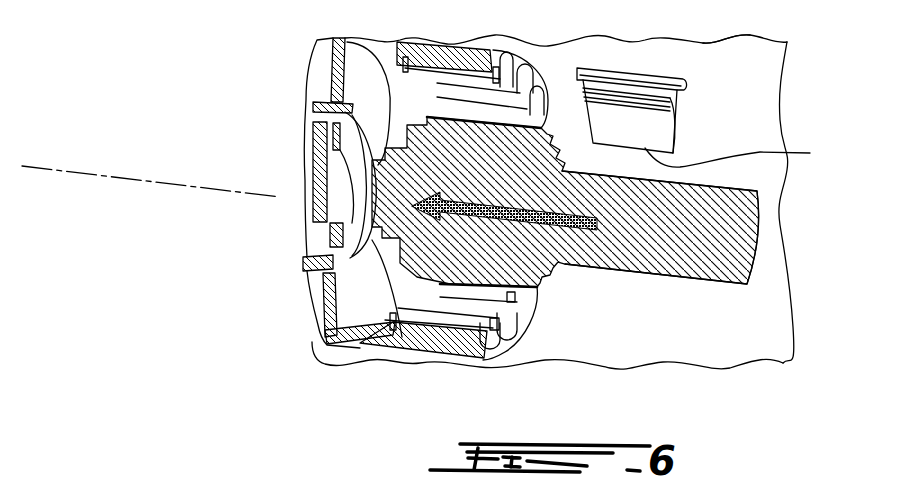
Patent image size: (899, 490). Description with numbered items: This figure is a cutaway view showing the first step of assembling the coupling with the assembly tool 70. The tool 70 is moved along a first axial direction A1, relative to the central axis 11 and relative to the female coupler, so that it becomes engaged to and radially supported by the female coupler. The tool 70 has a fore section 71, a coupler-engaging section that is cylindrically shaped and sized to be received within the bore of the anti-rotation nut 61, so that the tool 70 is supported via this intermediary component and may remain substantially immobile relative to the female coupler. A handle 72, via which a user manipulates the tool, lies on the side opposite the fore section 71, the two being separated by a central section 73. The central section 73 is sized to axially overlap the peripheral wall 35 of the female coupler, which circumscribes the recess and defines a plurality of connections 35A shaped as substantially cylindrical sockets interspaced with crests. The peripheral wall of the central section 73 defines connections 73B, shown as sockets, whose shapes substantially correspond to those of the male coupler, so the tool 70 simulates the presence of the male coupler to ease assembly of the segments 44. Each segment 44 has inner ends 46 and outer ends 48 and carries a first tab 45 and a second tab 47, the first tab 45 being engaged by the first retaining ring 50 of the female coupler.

The central axis 11 is at (150, 183).
The peripheral wall 35 is at (497, 360).
The connections 35A is at (350, 43).
The segments 44 is at (675, 118).
The first tab 45 is at (592, 68).
The inner ends 46 is at (742, 157).
The second tab 47 is at (720, 43).
The outer ends 48 is at (640, 80).
The first retaining ring 50 is at (393, 320).
The anti-rotation nut 61 is at (320, 110).
The tool 70 is at (688, 302).
The fore section 71 is at (340, 175).
The handle 72 is at (762, 213).
The central section 73 is at (491, 162).
The connections 73B is at (494, 125).
The first axial direction A1 is at (578, 232).